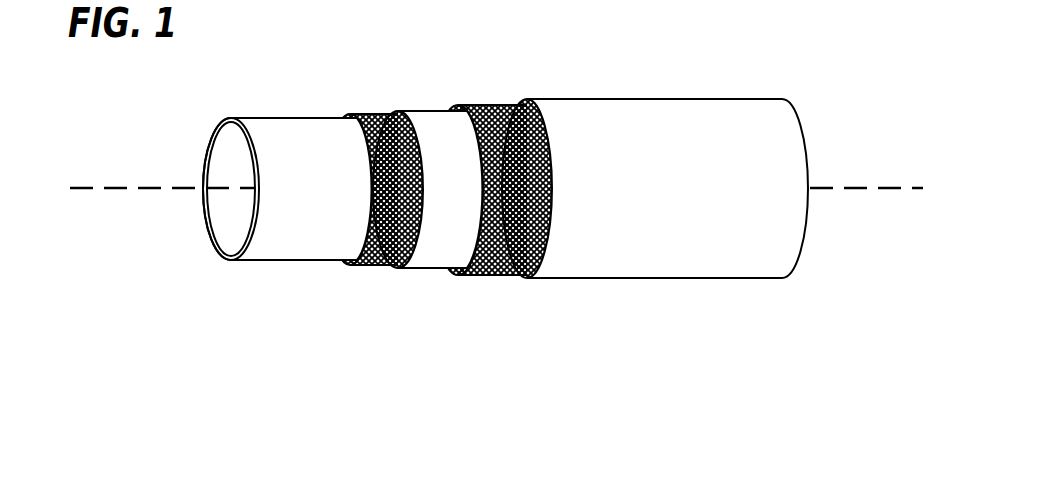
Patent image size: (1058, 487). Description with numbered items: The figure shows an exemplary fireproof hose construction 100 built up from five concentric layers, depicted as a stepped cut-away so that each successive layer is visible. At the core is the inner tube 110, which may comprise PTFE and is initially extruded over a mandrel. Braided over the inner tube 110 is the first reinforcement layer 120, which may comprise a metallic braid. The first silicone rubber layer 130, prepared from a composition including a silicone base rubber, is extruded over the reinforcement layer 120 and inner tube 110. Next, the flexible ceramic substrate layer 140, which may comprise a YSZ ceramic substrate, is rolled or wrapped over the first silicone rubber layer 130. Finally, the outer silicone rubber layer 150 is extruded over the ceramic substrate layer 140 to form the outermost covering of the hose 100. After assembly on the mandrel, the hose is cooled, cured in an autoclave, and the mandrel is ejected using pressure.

The fireproof hose construction 100 is at (496, 209).
The inner tube 110 is at (279, 282).
The first reinforcement layer 120 is at (378, 286).
The first silicone rubber layer 130 is at (433, 289).
The flexible ceramic substrate layer 140 is at (498, 296).
The outer silicone rubber layer 150 is at (661, 312).